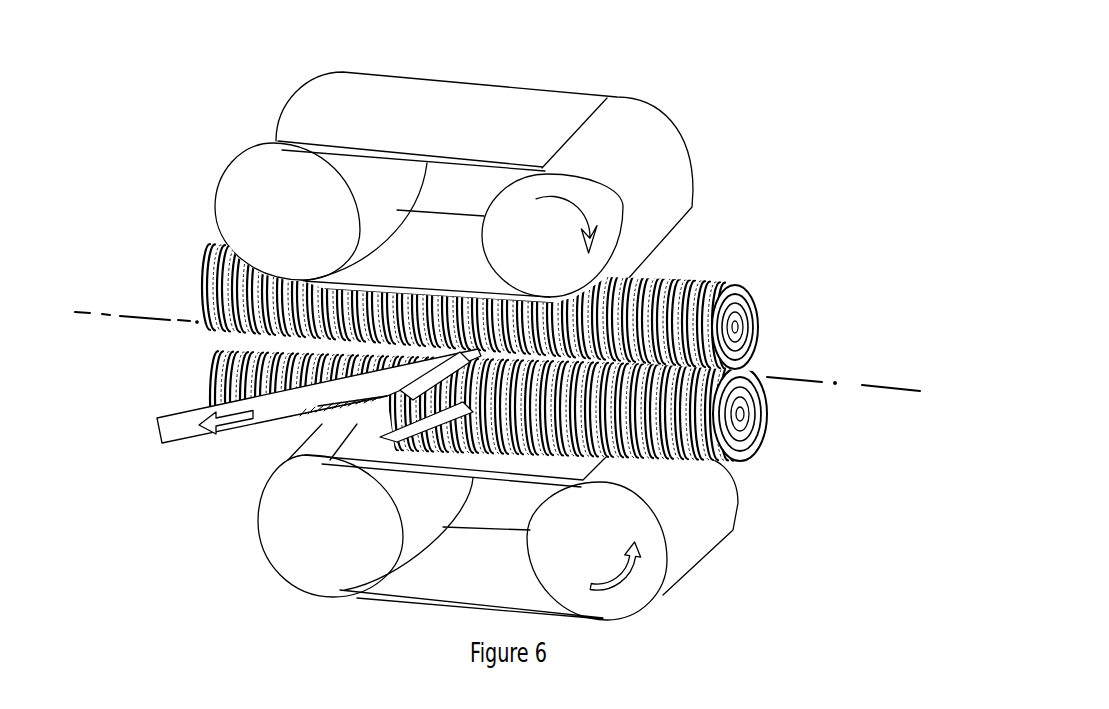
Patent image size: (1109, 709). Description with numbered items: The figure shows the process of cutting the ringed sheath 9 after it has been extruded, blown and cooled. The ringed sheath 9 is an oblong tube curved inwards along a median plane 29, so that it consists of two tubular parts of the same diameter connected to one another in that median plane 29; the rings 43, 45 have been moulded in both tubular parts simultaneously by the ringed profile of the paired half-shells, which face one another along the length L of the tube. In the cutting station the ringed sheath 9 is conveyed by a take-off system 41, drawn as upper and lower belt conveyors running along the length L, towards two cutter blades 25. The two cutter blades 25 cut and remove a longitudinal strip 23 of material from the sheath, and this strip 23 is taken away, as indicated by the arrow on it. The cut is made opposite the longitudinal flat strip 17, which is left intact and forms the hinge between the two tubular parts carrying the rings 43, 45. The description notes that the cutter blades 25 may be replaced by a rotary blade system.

The ringed sheath 9 is at (554, 288).
The longitudinal flat strip 17 is at (522, 411).
The longitudinal strip 23 is at (283, 413).
The cutter blades 25 is at (407, 443).
The median plane 29 is at (667, 443).
The take-off system 41 is at (677, 118).
The rings 43 is at (733, 461).
The rings 45 is at (728, 291).
The length of the tube L is at (884, 386).